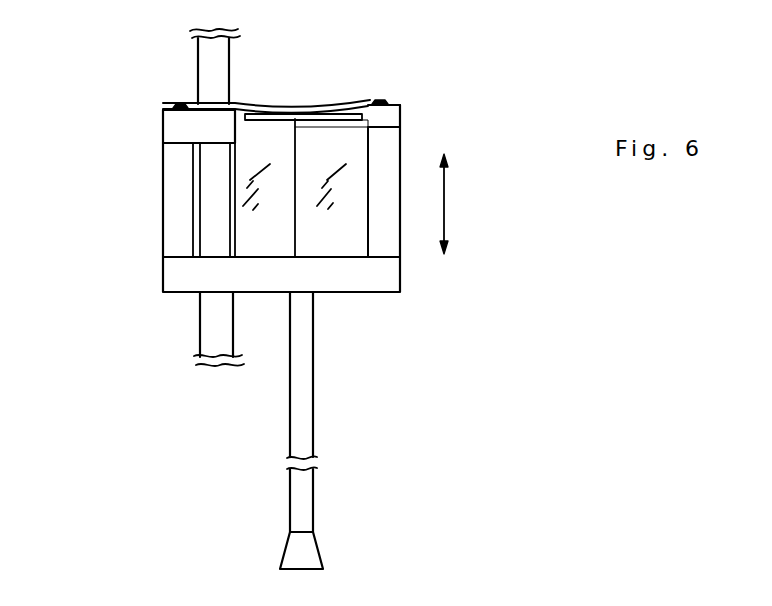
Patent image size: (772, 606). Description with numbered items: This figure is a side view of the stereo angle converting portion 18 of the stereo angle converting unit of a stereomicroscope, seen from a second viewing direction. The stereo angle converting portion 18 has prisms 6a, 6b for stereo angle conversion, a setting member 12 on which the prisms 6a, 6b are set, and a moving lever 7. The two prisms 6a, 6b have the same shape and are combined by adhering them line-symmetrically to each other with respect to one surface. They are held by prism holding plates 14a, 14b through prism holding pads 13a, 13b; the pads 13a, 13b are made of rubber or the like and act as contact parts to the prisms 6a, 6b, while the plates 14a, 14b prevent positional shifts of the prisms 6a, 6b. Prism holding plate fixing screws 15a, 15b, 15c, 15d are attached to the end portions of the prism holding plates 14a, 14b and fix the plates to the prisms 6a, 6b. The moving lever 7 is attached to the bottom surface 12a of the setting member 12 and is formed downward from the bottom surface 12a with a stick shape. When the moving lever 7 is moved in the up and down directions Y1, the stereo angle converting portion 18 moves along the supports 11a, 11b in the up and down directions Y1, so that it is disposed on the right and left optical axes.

The stereo angle converting portion 18 is at (224, 239).
The setting member 12 is at (382, 277).
The bottom surface 12a is at (337, 292).
The moving lever 7 is at (314, 512).
The support 11a is at (152, 197).
The support 11b is at (197, 60).
The prism holding pad 13a is at (299, 80).
The prism holding pad 13b is at (268, 112).
The prism holding plate 14a is at (287, 61).
The prism holding plate 14b is at (343, 105).
The prism holding plate fixing screw 15a is at (424, 74).
The prism holding plate fixing screw 15b is at (108, 94).
The prism holding plate fixing screw 15c is at (375, 100).
The prism holding plate fixing screw 15d is at (176, 104).
The prism 6a is at (396, 115).
The prism 6b is at (342, 135).
The up and down directions Y1 is at (446, 210).